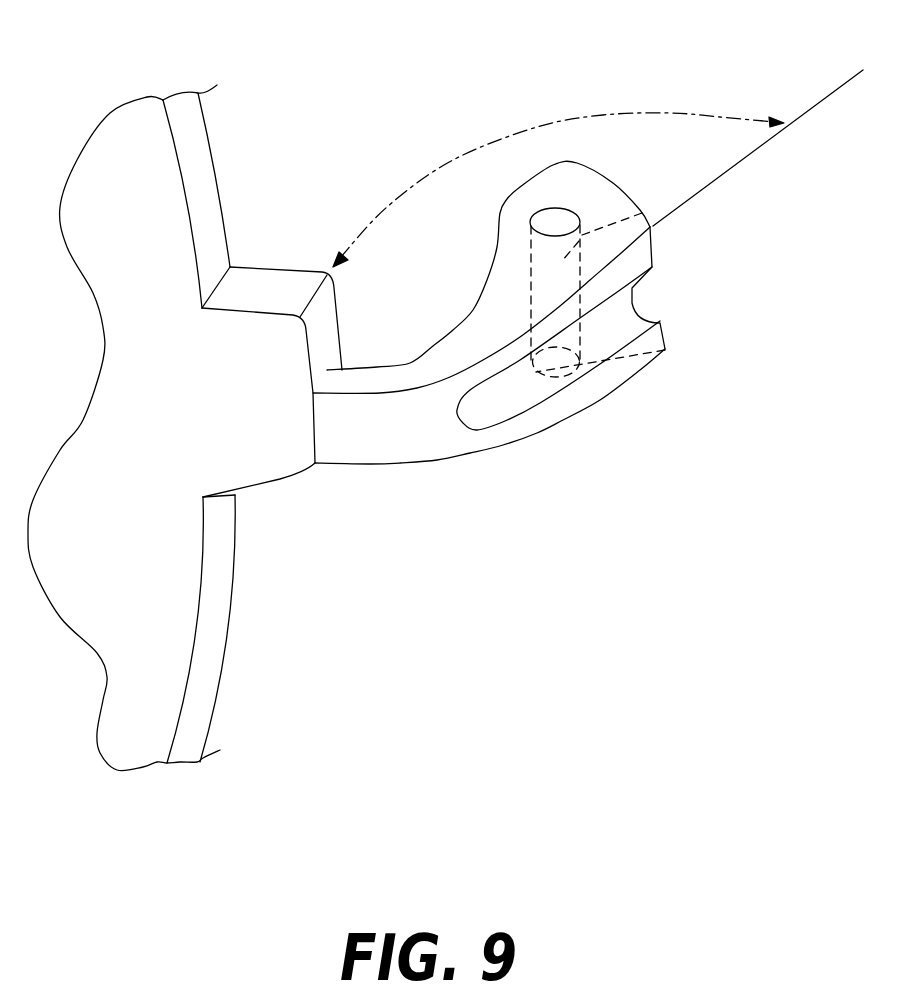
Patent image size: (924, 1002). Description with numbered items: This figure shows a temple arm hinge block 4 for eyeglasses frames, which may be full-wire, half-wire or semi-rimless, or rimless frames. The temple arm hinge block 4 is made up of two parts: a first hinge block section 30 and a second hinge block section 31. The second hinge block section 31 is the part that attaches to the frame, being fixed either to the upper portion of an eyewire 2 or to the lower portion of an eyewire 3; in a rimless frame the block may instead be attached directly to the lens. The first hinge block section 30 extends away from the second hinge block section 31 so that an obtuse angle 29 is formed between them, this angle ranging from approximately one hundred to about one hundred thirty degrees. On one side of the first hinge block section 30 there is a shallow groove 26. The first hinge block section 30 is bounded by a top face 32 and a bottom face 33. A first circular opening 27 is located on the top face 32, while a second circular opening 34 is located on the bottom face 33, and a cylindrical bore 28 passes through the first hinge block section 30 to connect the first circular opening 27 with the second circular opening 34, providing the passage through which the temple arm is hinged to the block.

The upper portion of an eyewire 2 is at (207, 150).
The lower portion of an eyewire 3 is at (233, 627).
The temple arm hinge block 4 is at (403, 541).
The shallow groove 26 is at (539, 392).
The first circular opening 27 is at (560, 217).
The cylindrical bore 28 is at (643, 212).
The obtuse angle 29 is at (637, 117).
The first hinge block section 30 is at (555, 430).
The second hinge block section 31 is at (340, 466).
The top face 32 is at (492, 305).
The bottom face 33 is at (500, 450).
The second circular opening 34 is at (667, 350).